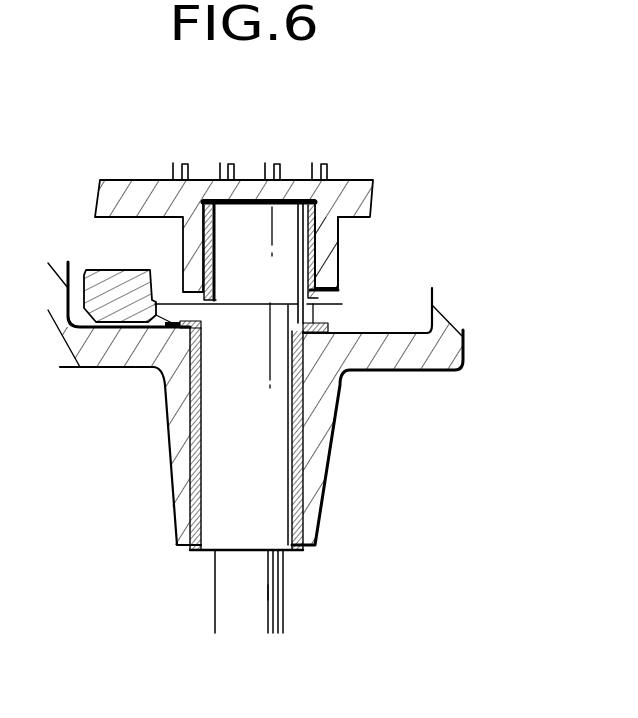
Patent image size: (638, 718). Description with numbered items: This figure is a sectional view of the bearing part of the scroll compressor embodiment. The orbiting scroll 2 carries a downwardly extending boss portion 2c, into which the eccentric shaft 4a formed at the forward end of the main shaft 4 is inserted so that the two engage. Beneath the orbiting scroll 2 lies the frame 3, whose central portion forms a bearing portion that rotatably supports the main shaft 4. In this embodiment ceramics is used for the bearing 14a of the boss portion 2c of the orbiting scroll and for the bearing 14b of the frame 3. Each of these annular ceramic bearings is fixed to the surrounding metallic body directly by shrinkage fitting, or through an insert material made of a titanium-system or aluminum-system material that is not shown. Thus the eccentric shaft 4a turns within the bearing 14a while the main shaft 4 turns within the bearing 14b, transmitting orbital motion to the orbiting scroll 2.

The orbiting scroll 2 is at (348, 190).
The boss portion 2c is at (328, 265).
The frame 3 is at (403, 352).
The main shaft 4 is at (250, 537).
The eccentric shaft 4a is at (244, 216).
The bearing of the boss portion 14a is at (308, 243).
The bearing portion of the frame 14b is at (198, 458).